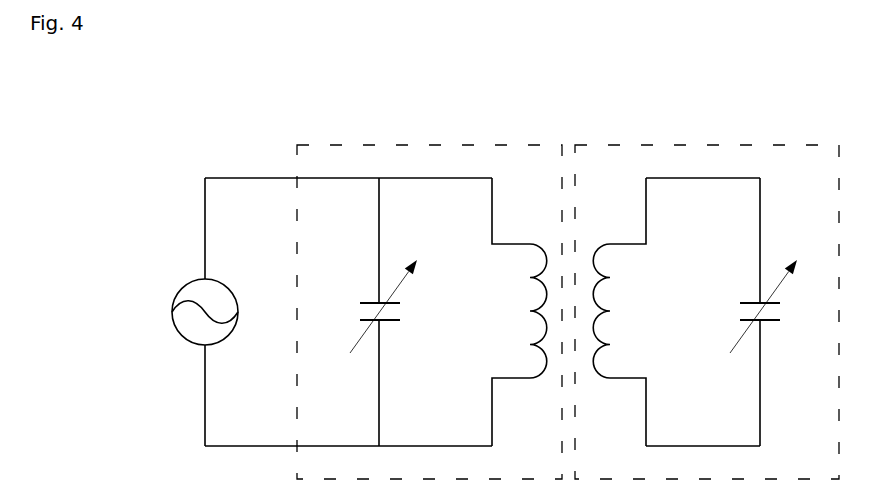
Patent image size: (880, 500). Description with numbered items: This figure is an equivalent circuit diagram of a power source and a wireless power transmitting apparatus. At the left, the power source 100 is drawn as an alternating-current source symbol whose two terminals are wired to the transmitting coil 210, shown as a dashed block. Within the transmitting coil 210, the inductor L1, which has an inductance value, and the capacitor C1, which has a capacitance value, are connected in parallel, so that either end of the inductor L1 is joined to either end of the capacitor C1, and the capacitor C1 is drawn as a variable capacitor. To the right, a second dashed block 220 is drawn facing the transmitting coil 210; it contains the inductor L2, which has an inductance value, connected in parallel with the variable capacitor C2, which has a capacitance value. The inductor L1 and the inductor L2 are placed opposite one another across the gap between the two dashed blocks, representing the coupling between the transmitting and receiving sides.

The power source 100 is at (173, 303).
The transmitting coil 210 is at (413, 143).
The receiving resonator 220 is at (725, 143).
The capacitor C1 is at (371, 312).
The inductor L1 is at (519, 312).
The inductor L2 is at (619, 312).
The capacitor C2 is at (772, 312).